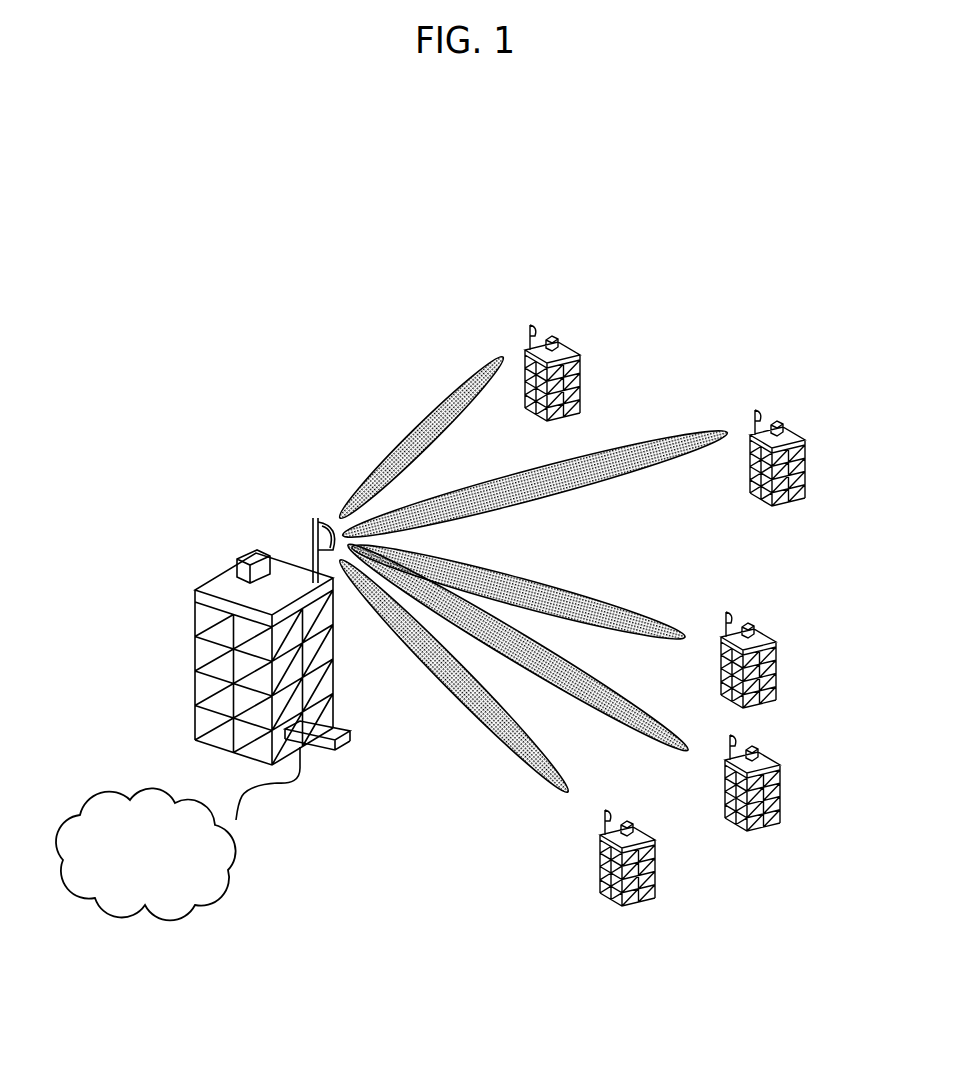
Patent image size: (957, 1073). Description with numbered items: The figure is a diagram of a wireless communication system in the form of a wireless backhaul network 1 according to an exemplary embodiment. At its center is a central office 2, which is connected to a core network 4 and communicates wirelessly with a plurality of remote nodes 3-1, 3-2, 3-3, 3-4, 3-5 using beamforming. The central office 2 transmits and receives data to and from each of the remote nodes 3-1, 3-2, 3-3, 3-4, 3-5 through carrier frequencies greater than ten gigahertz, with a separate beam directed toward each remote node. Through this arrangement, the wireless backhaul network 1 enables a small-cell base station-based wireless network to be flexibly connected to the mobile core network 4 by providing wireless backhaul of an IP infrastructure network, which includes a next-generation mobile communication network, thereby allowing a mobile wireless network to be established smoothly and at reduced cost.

The wireless backhaul network 1 is at (572, 272).
The central office 2 is at (216, 582).
The remote node 3-1 is at (576, 345).
The remote node 3-2 is at (798, 433).
The remote node 3-3 is at (770, 635).
The remote node 3-4 is at (773, 760).
The remote node 3-5 is at (650, 832).
The core network 4 is at (140, 795).